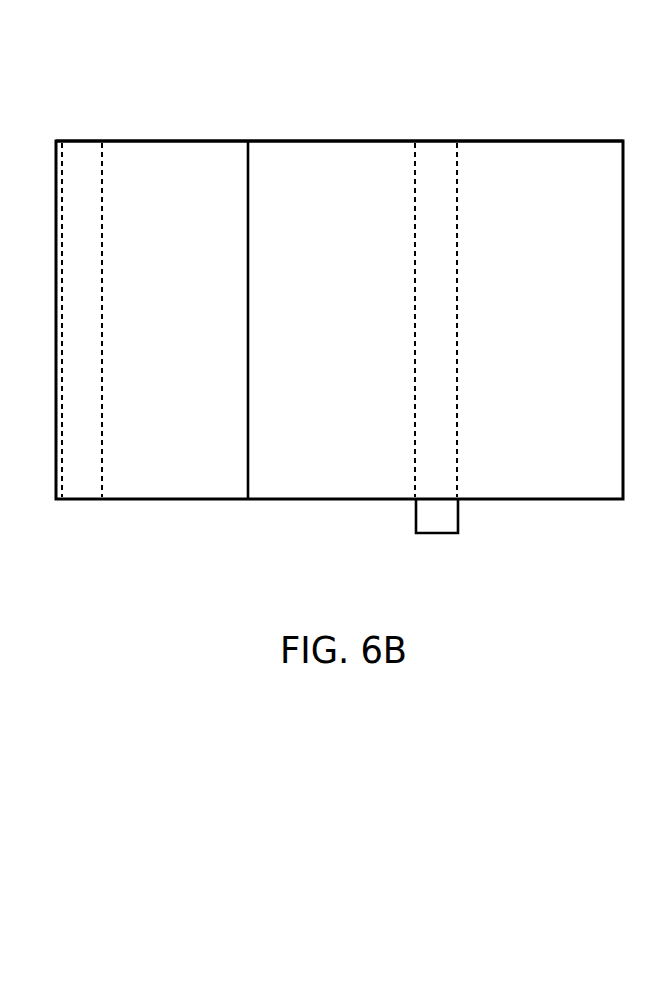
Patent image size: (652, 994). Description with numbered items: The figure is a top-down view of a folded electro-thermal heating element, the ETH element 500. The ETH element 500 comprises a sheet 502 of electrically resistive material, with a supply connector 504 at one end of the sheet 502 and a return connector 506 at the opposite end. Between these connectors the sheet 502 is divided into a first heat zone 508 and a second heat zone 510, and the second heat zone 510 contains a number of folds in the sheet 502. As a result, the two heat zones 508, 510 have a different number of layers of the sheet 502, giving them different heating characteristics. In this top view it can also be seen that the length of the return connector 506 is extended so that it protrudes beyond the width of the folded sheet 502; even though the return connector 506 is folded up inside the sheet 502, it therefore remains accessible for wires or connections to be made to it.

The ETH element 500 is at (525, 78).
The sheet 502 is at (348, 140).
The supply connector 504 is at (83, 162).
The return connector 506 is at (445, 162).
The first heat zone 508 is at (203, 321).
The second heat zone 510 is at (377, 321).